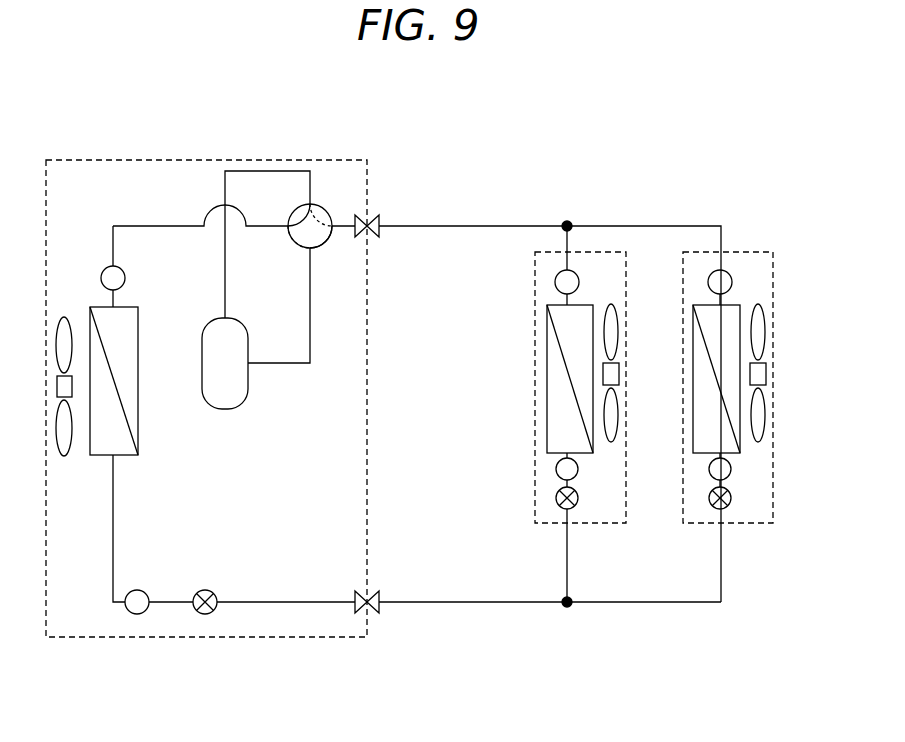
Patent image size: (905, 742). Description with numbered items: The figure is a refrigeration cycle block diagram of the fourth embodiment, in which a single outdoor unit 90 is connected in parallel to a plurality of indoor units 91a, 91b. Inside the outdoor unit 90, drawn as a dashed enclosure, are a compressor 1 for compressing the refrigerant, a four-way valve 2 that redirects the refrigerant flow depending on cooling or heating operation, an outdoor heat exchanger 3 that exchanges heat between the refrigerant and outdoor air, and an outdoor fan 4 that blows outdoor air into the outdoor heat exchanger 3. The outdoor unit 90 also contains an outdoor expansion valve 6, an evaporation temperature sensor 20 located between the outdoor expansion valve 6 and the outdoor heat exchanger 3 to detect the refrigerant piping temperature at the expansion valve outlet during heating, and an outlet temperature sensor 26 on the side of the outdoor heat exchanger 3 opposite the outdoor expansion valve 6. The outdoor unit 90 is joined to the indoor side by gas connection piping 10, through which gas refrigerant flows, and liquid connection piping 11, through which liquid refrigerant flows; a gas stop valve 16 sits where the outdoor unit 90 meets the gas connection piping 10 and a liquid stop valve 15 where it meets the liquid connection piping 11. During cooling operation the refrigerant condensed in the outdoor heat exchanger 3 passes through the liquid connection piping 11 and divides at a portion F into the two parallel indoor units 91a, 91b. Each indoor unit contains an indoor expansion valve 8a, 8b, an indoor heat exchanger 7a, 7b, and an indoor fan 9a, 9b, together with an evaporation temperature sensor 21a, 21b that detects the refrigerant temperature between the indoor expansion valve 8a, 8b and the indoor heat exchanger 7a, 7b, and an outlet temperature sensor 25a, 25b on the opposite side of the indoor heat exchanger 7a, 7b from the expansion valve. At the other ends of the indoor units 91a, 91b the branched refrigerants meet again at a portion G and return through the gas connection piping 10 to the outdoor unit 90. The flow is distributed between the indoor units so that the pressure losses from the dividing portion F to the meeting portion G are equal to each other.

The compressor 1 is at (208, 320).
The four-way valve 2 is at (314, 205).
The outdoor heat exchanger 3 is at (127, 457).
The outdoor fan 4 is at (66, 457).
The outdoor expansion valve 6 is at (207, 614).
The indoor heat exchanger 7a is at (547, 368).
The indoor heat exchanger 7b is at (693, 368).
The indoor expansion valve 8a is at (556, 498).
The indoor expansion valve 8b is at (709, 498).
The indoor fan 9a is at (616, 306).
The indoor fan 9b is at (763, 306).
The gas connection piping 10 is at (450, 226).
The liquid connection piping 11 is at (483, 603).
The liquid stop valve 15 is at (373, 613).
The gas stop valve 16 is at (373, 214).
The evaporation temperature sensor 20 is at (139, 614).
The evaporation temperature sensor 21a is at (556, 471).
The evaporation temperature sensor 21b is at (709, 471).
The outlet temperature sensor 25a is at (574, 272).
The outlet temperature sensor 25b is at (727, 272).
The outlet temperature sensor 26 is at (105, 268).
The outdoor unit 90 is at (312, 637).
The indoor unit 91a is at (606, 523).
The indoor unit 91b is at (755, 523).
The meeting portion G is at (566, 223).
The dividing portion F is at (569, 608).